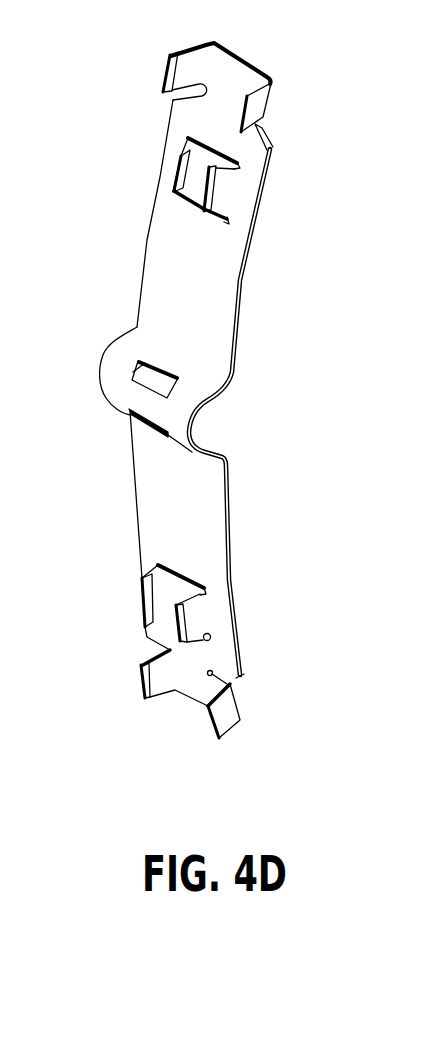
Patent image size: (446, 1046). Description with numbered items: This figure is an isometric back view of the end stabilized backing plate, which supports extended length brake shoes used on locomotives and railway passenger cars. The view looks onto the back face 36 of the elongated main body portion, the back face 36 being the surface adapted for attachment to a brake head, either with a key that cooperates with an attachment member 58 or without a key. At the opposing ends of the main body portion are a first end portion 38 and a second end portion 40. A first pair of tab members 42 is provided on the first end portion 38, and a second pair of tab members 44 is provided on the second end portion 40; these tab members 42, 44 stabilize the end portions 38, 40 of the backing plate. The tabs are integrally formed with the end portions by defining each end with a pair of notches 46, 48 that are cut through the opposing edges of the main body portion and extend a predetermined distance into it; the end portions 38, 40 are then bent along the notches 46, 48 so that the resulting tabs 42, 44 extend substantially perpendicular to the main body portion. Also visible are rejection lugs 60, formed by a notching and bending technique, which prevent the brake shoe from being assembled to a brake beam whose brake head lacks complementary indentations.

The back face 36 is at (173, 268).
The first end portion 38 is at (274, 95).
The second end portion 40 is at (235, 693).
The first pair of tab members 42 is at (168, 64).
The second pair of tab members 44 is at (142, 693).
The notch 46 is at (265, 128).
The notch 48 is at (162, 647).
The attachment member 58 is at (157, 378).
The rejection lug 60 is at (176, 166).